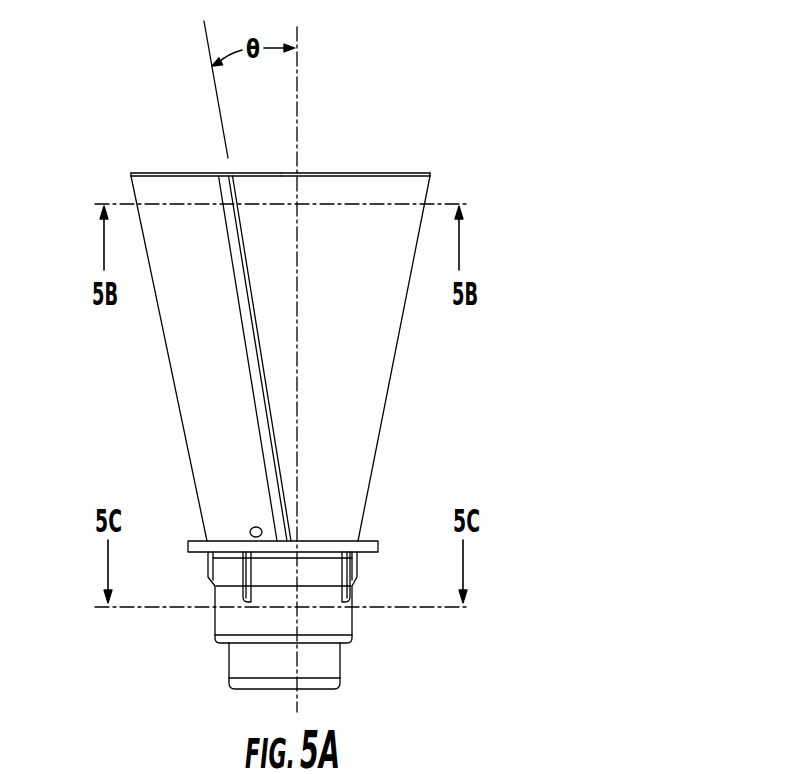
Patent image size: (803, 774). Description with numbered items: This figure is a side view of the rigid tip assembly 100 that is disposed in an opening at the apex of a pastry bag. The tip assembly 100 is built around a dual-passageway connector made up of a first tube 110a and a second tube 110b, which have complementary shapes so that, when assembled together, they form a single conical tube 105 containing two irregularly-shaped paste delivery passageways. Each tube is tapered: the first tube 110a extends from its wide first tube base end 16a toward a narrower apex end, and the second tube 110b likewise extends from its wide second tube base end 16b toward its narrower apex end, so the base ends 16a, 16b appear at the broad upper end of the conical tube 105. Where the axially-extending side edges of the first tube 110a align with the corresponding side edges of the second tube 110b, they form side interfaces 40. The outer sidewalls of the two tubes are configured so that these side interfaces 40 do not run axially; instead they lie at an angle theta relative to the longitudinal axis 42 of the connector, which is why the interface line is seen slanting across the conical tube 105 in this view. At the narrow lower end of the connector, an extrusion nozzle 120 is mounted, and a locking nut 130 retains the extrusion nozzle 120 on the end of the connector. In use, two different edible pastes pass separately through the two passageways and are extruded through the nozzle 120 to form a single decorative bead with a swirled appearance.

The tip assembly 100 is at (68, 57).
The conical tube 105 is at (337, 286).
The first tube base end 16a is at (409, 174).
The second tube base end 16b is at (148, 173).
The side interfaces 40 is at (223, 184).
The longitudinal axis 42 is at (298, 100).
The first tube 110a is at (360, 380).
The second tube 110b is at (188, 367).
The locking nut 130 is at (340, 615).
The extrusion nozzle 120 is at (322, 665).